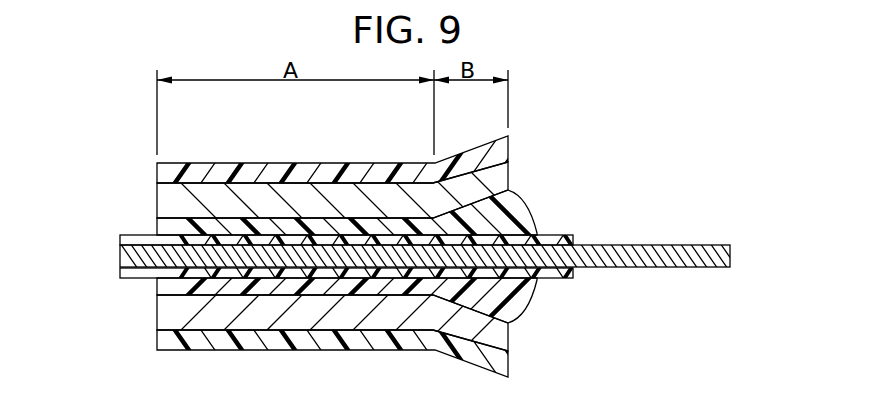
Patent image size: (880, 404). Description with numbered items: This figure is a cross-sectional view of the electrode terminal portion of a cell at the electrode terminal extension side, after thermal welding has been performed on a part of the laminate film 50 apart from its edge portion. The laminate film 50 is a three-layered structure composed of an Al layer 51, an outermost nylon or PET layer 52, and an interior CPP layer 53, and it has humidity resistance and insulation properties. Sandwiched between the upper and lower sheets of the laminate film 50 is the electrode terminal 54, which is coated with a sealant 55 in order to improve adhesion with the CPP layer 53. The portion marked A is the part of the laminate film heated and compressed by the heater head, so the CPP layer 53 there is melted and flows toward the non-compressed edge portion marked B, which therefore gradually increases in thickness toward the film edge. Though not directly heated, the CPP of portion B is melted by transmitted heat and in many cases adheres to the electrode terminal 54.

The laminate film 50 is at (50, 163).
The Al layer 51 is at (168, 203).
The outermost nylon or PET layer 52 is at (168, 173).
The CPP layer 53 is at (165, 230).
The electrode terminal 54 is at (693, 262).
The sealant 55 is at (573, 272).